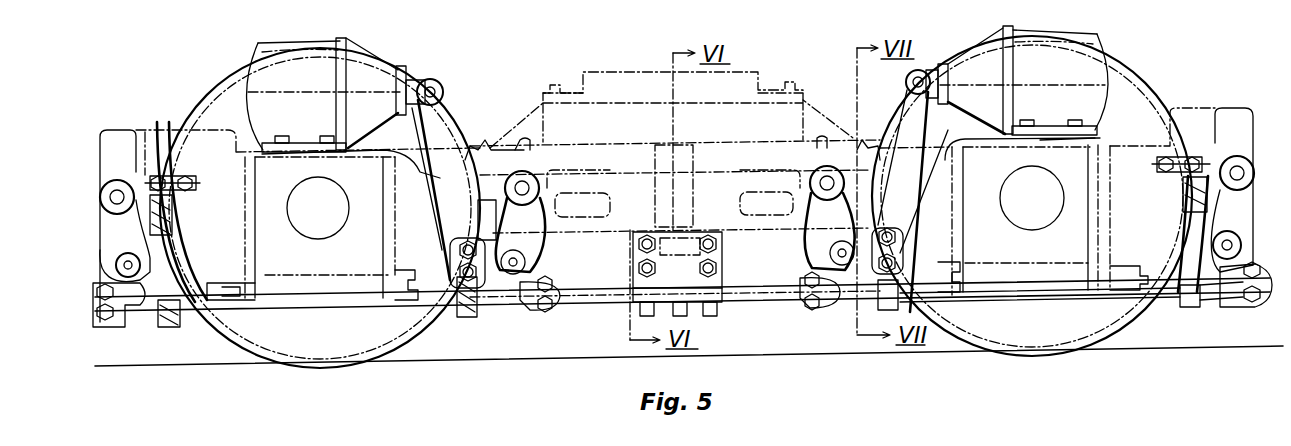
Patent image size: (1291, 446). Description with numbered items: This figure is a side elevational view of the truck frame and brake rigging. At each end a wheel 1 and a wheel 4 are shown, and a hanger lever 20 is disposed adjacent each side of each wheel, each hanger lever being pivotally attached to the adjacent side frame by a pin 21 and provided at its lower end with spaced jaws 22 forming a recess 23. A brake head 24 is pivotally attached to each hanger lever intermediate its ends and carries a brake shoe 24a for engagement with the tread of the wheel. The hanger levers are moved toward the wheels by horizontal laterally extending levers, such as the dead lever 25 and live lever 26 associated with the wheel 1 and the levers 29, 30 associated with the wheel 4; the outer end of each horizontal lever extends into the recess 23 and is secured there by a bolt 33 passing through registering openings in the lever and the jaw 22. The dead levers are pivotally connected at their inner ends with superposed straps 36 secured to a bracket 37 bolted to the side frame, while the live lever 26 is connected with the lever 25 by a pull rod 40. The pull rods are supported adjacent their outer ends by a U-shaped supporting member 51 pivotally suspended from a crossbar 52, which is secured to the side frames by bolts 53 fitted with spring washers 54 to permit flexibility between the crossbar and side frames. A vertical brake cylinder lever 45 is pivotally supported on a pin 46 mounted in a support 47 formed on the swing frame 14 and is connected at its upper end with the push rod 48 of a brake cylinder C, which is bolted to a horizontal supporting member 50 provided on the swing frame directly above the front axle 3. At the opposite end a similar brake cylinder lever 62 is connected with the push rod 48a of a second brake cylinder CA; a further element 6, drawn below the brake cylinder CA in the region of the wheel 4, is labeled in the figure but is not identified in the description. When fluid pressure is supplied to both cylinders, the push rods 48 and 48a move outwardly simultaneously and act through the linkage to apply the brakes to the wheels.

The wheel 1 is at (1140, 76).
The front axle 3 is at (1031, 228).
The wheel 4 is at (214, 92).
The traction motor 6 is at (320, 243).
The swing frame 14 is at (762, 115).
The hanger lever 20 is at (546, 243).
The pin 21 is at (525, 188).
The jaw 22 is at (103, 322).
The recess 23 is at (120, 320).
The brake head 24 is at (144, 242).
The brake shoe 24a is at (484, 225).
The horizontal lever 25 is at (812, 306).
The horizontal lever 26 is at (1250, 297).
The horizontal lever 29 is at (142, 304).
The horizontal lever 30 is at (480, 302).
The bolt 33 is at (112, 278).
The straps 36 is at (746, 305).
The bracket 37 is at (722, 262).
The pull rod 40 is at (1056, 290).
The brake cylinder lever 45 is at (906, 115).
The pin 46 is at (903, 250).
The support 47 is at (923, 207).
The push rod 48 is at (923, 75).
The push rod 48a is at (428, 84).
The horizontal supporting member 50 is at (1060, 138).
The U-shaped supporting member 51 is at (1150, 300).
The crossbar 52 is at (1183, 188).
The bolt 53 is at (192, 183).
The spring washer 54 is at (162, 178).
The brake cylinder lever 62 is at (441, 128).
The brake cylinder C is at (1099, 46).
The brake cylinder CA is at (264, 57).